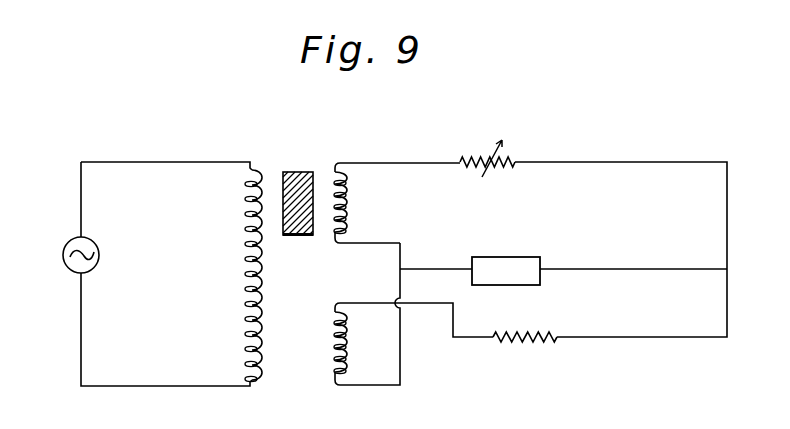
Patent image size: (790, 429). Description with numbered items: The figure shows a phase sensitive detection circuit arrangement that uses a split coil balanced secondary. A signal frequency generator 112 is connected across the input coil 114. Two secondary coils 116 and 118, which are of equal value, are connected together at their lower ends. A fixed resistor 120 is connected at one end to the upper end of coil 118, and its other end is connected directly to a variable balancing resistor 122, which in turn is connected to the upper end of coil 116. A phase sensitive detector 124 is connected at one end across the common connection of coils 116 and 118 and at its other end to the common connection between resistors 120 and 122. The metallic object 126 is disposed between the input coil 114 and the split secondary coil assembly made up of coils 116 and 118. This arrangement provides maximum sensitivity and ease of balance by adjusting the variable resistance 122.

The signal frequency generator 112 is at (72, 245).
The input coil 114 is at (247, 248).
The secondary coil 116 is at (332, 177).
The secondary coil 118 is at (333, 375).
The fixed resistor 120 is at (520, 343).
The variable balancing resistor 122 is at (483, 139).
The phase sensitive detector 124 is at (503, 254).
The metallic object 126 is at (302, 237).